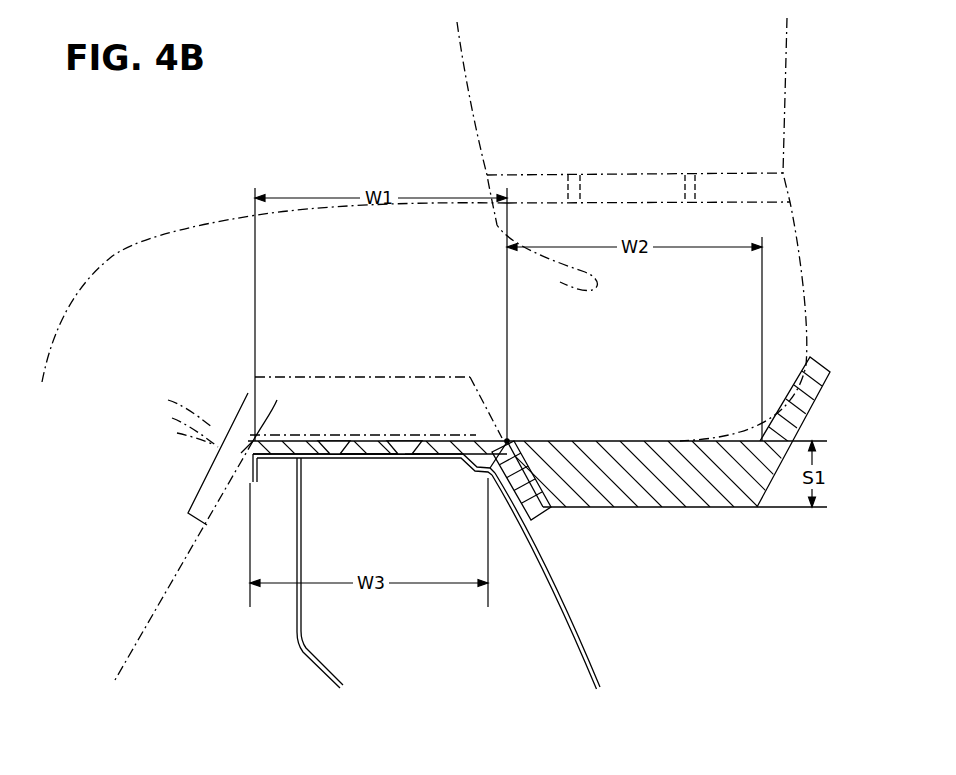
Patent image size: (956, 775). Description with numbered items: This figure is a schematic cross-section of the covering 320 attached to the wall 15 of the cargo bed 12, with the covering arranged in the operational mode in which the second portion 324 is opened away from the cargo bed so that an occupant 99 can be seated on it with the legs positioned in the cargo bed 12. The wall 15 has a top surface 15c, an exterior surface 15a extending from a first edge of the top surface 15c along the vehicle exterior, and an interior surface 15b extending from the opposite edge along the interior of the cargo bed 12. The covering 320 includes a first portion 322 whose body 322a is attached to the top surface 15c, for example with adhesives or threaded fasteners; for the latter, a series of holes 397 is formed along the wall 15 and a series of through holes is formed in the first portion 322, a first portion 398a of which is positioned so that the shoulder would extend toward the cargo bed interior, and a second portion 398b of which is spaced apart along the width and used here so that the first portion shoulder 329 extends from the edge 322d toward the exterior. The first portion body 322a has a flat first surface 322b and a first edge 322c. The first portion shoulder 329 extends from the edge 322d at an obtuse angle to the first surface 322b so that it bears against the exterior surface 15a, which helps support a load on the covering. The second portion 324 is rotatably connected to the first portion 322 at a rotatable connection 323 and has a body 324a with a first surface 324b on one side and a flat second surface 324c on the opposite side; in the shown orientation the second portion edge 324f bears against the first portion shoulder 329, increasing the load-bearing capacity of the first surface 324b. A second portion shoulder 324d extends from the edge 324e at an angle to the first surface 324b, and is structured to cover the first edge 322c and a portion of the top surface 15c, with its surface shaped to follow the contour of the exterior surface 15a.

The occupant 99 is at (477, 136).
The cargo bed 12 is at (195, 651).
The wall 15 is at (452, 571).
The exterior surface 15a is at (580, 632).
The interior surface 15b is at (296, 600).
The top surface 15c is at (298, 465).
The covering 320 is at (232, 385).
The first portion 322 is at (354, 432).
The first portion body 322a is at (372, 460).
The first portion first surface 322b is at (277, 438).
The first edge 322c is at (253, 442).
The edge 322d is at (505, 437).
The rotatable connection 323 is at (512, 439).
The second portion 324 is at (467, 432).
The second portion body 324a is at (430, 387).
The second portion first surface 324b is at (288, 433).
The second portion second surface 324c is at (280, 377).
The second portion shoulder 324d is at (213, 440).
The edge of the second portion 324e is at (233, 417).
The second portion edge 324f is at (500, 425).
The first portion shoulder 329 is at (522, 488).
The holes 397 is at (412, 459).
The first portion of through holes 398a is at (335, 441).
The second portion of through holes 398b is at (410, 441).